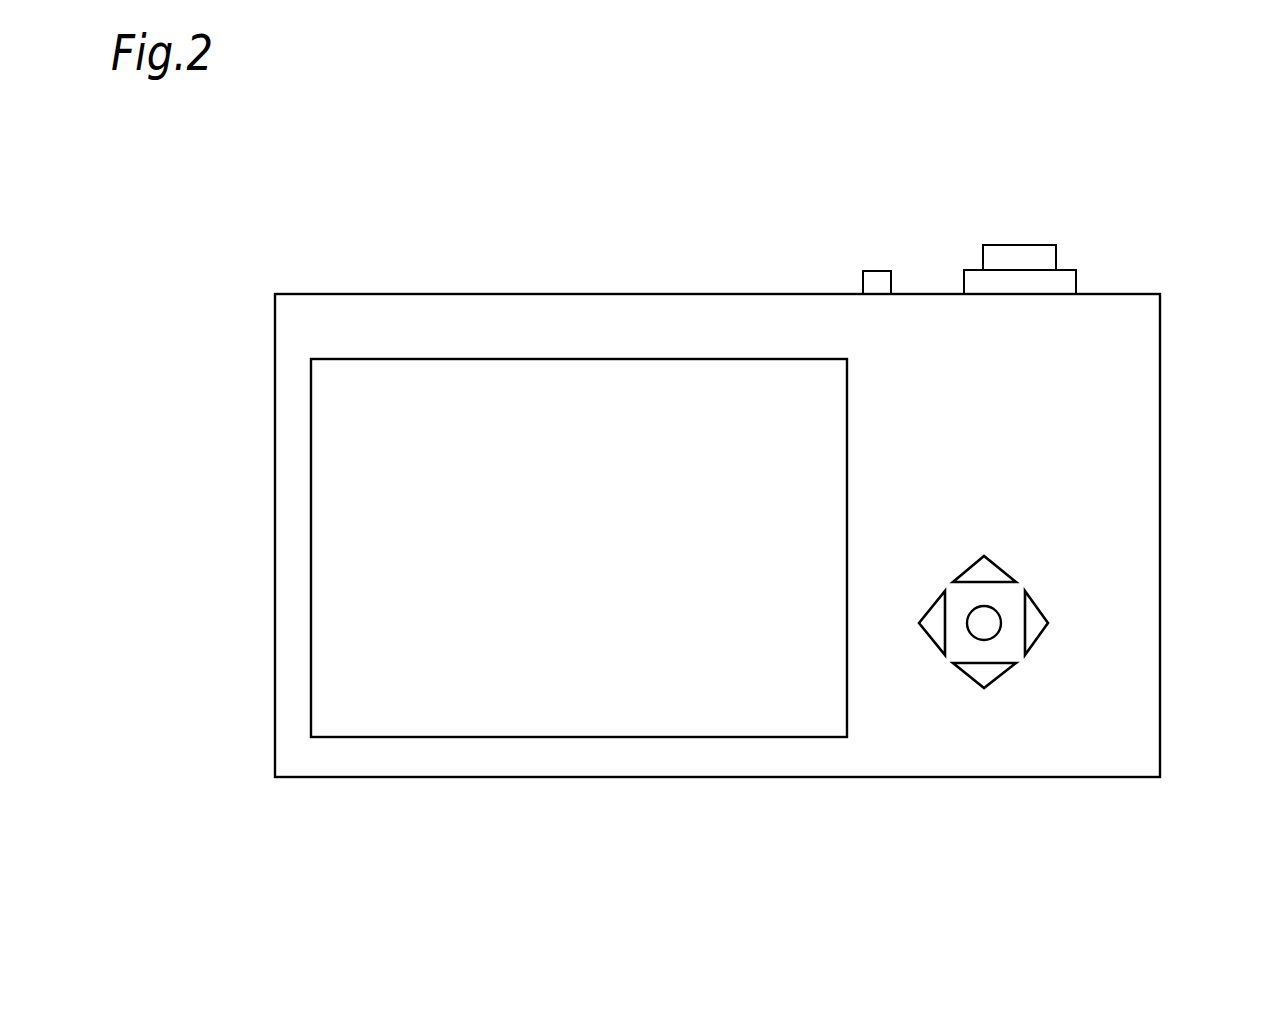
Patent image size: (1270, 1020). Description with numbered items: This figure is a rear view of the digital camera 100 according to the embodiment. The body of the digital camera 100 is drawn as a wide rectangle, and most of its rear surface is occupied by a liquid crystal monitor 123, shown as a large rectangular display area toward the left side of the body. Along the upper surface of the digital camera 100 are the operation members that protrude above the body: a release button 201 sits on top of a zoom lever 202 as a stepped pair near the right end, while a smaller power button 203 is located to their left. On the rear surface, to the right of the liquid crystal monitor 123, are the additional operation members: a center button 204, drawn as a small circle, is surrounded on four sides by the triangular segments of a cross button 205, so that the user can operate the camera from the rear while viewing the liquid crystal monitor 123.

The digital camera 100 is at (299, 134).
The liquid crystal monitor 123 is at (433, 698).
The release button 201 is at (1039, 251).
The zoom lever 202 is at (1076, 270).
The power button 203 is at (865, 272).
The center button 204 is at (987, 623).
The cross button 205 is at (985, 673).